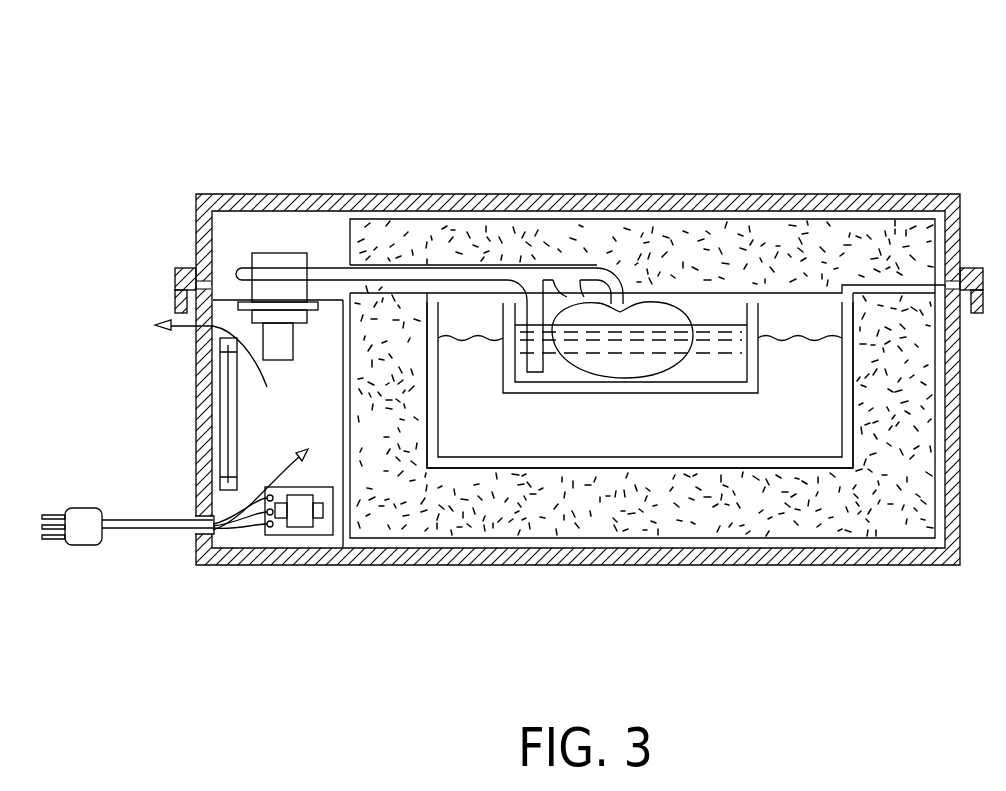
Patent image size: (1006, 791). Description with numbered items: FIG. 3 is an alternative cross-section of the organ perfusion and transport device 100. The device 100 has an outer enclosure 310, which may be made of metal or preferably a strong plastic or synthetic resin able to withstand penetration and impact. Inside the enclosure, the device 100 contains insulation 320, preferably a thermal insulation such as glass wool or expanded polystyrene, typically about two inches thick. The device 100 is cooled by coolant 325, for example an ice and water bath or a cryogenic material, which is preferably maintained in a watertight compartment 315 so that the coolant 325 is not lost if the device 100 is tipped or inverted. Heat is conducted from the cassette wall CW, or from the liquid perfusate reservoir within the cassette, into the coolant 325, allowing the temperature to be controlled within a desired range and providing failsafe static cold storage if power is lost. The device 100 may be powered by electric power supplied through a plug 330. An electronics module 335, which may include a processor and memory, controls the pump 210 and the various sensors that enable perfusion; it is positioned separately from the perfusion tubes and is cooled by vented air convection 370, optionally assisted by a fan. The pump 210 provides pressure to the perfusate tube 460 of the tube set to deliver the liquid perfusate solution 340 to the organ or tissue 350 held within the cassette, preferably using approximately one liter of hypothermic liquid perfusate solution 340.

The device 100 is at (432, 110).
The pump 210 is at (270, 253).
The outer enclosure 310 is at (900, 565).
The watertight compartment 315 is at (740, 468).
The insulation 320 is at (840, 520).
The coolant 325 is at (600, 438).
The plug 330 is at (80, 546).
The electronics module 335 is at (238, 440).
The liquid perfusate solution 340 is at (727, 327).
The organ or tissue 350 is at (663, 306).
The vented air convection 370 is at (185, 327).
The perfusate tube 460 is at (506, 267).
The cassette wall CW is at (742, 396).